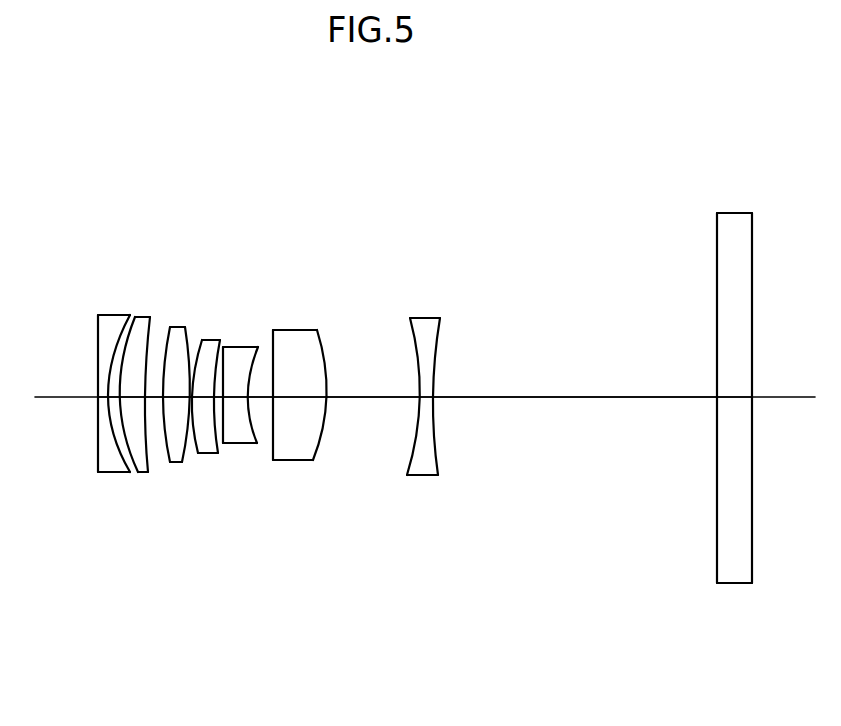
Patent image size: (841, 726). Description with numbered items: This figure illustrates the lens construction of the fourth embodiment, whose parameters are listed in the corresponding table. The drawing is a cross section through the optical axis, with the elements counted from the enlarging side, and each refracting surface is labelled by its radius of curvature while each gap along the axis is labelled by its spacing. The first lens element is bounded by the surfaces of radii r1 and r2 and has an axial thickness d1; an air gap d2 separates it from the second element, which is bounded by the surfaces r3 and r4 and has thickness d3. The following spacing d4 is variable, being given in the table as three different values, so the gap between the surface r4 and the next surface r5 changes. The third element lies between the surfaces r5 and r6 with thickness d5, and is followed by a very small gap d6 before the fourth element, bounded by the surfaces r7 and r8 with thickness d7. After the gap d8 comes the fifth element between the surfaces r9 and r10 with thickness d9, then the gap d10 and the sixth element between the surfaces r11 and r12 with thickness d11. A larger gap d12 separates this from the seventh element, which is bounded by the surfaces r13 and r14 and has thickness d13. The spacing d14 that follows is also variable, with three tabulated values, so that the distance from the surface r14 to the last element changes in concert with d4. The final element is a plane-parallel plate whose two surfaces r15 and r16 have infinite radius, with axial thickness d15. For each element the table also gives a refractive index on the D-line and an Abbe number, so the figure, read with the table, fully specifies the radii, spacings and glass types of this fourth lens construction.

The radius of curvature r1 is at (97, 353).
The radius of curvature r2 is at (117, 345).
The radius of curvature r3 is at (135, 318).
The radius of curvature r4 is at (148, 317).
The radius of curvature r5 is at (170, 327).
The radius of curvature r6 is at (185, 327).
The radius of curvature r7 is at (202, 340).
The radius of curvature r8 is at (217, 355).
The radius of curvature r9 is at (232, 347).
The radius of curvature r10 is at (252, 365).
The radius of curvature r11 is at (275, 365).
The radius of curvature r12 is at (323, 358).
The radius of curvature r13 is at (413, 333).
The radius of curvature r14 is at (438, 343).
The radius of curvature r15 is at (715, 313).
The radius of curvature r16 is at (752, 320).
The spacing on the axis d1 is at (103, 397).
The spacing on the axis d2 is at (114, 397).
The spacing on the axis d3 is at (132, 397).
The spacing on the axis d4 is at (154, 397).
The spacing on the axis d5 is at (177, 397).
The spacing on the axis d6 is at (191, 397).
The spacing on the axis d7 is at (203, 397).
The spacing on the axis d8 is at (218, 397).
The spacing on the axis d9 is at (235, 397).
The spacing on the axis d10 is at (260, 397).
The spacing on the axis d11 is at (300, 397).
The spacing on the axis d12 is at (373, 397).
The spacing on the axis d13 is at (427, 397).
The spacing on the axis d14 is at (572, 397).
The spacing on the axis d15 is at (737, 397).